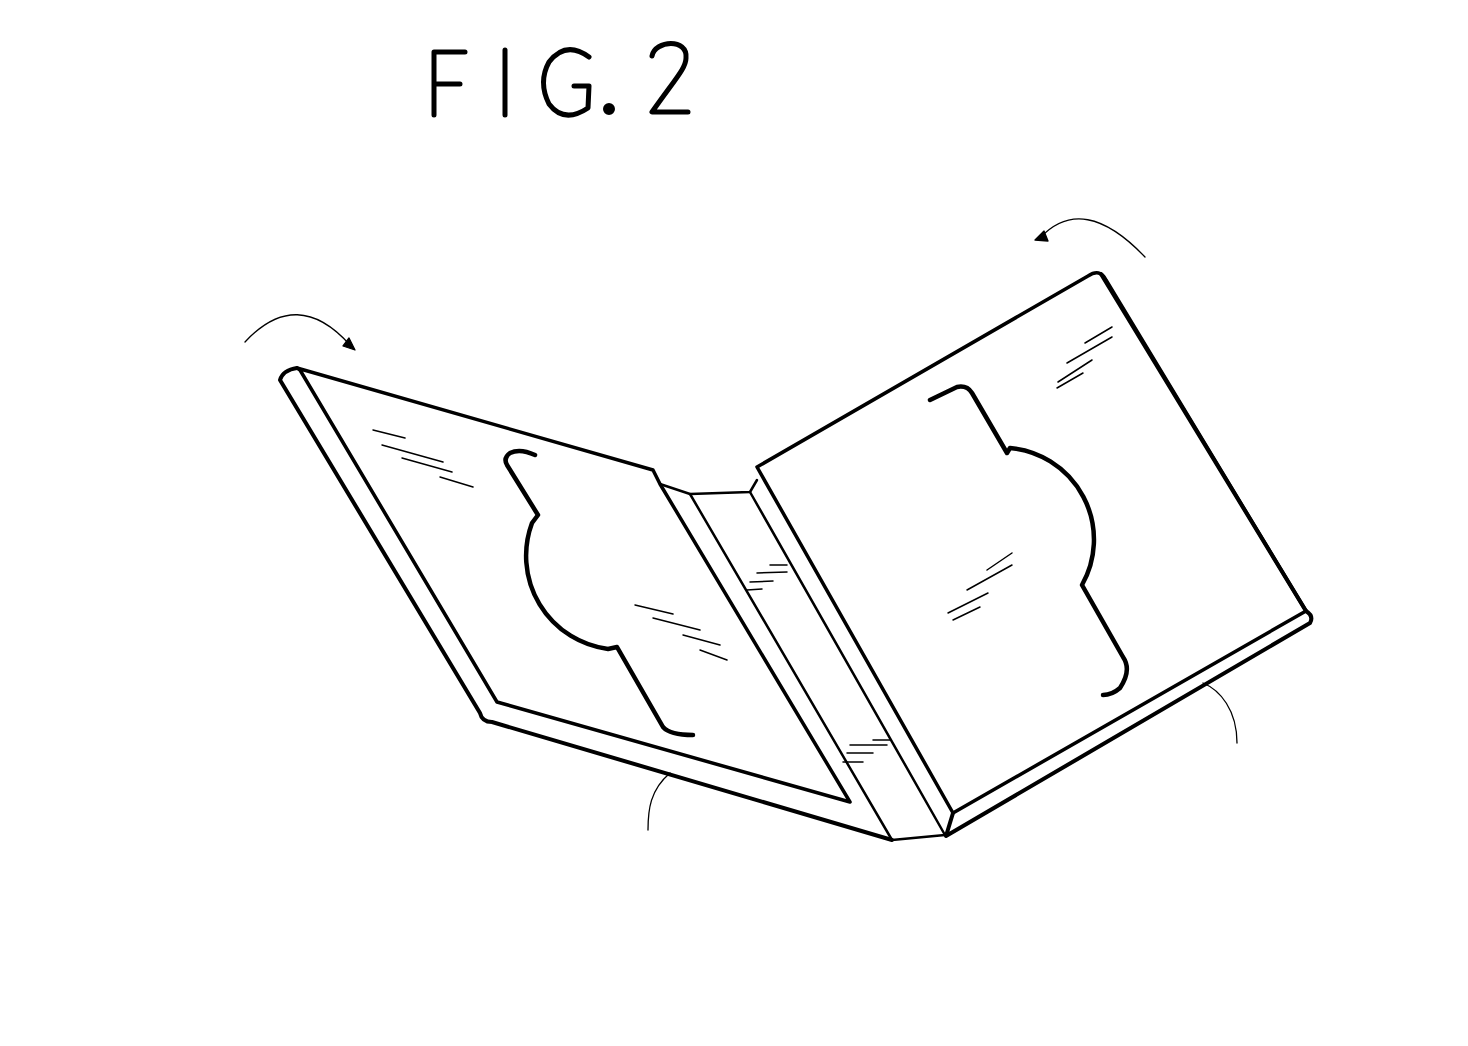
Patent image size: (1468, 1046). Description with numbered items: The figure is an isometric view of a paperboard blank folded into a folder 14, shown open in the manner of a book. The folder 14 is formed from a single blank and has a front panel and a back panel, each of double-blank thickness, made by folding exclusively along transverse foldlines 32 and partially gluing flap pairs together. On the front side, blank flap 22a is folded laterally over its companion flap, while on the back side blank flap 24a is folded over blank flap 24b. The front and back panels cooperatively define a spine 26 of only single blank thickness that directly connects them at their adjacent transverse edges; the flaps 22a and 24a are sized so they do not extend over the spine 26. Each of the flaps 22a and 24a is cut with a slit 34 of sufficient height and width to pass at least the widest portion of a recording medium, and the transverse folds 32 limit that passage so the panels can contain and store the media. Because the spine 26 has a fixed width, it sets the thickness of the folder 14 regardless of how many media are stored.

The folder 14 is at (801, 575).
The blank flap 22a is at (512, 674).
The blank flap 24a is at (1243, 570).
The blank flap 24b is at (1273, 648).
The spine 26 is at (907, 798).
The transverse foldline 32 is at (345, 483).
The slit 34 is at (523, 566).